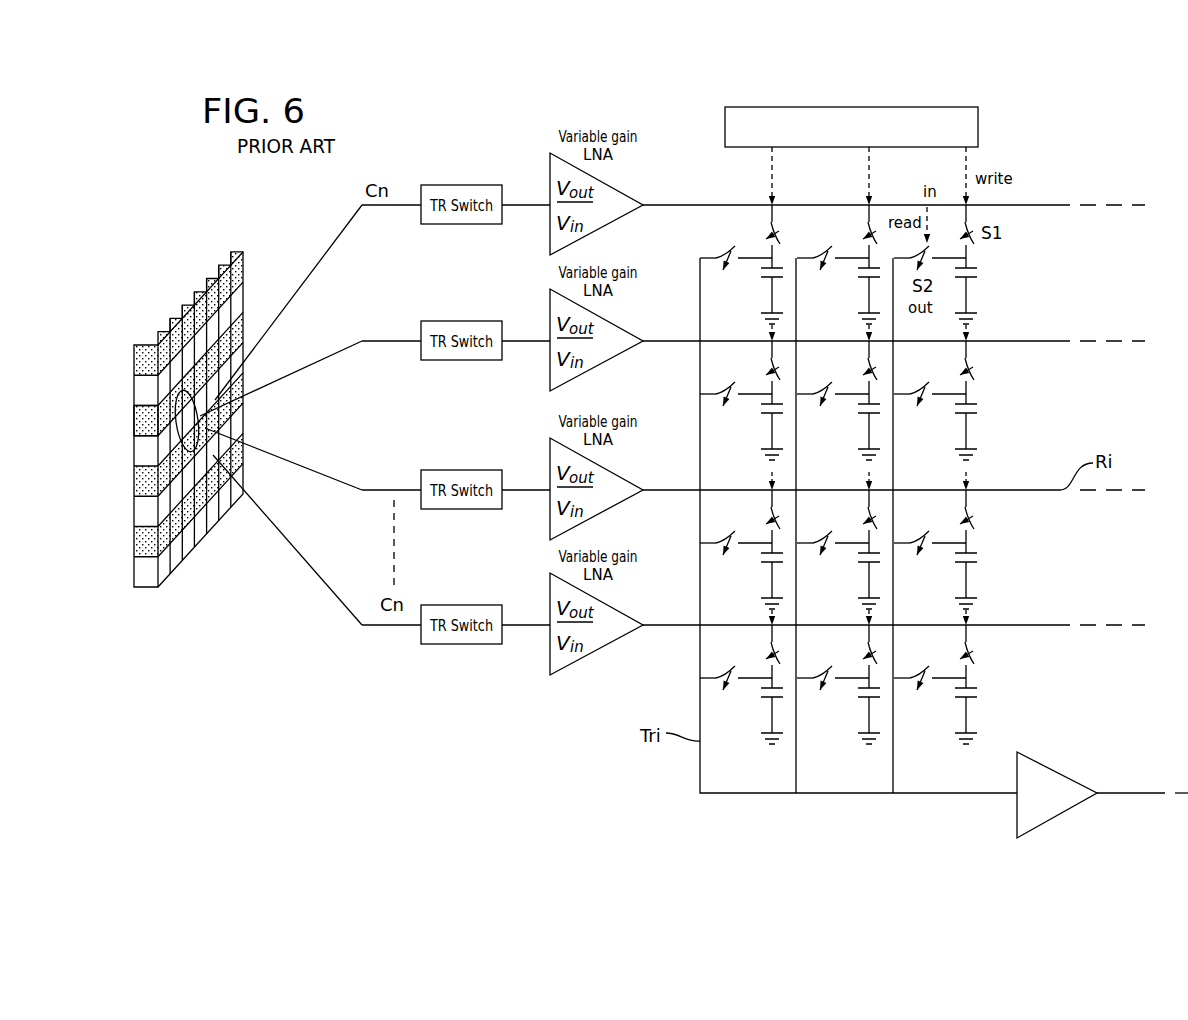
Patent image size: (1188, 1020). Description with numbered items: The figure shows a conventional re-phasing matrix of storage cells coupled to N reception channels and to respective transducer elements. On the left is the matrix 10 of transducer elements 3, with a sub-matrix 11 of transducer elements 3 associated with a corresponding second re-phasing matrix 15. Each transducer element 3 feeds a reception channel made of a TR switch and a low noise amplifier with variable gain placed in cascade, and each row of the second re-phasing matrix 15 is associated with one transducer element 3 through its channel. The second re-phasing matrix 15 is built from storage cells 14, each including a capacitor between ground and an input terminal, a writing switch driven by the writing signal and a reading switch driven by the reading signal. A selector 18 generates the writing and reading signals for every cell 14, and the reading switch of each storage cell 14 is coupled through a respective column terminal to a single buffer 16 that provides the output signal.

The transducer element 3 is at (140, 406).
The matrix of transducer elements 10 is at (179, 300).
The sub-matrix of transducer elements 11 is at (175, 445).
The storage cell 14 is at (995, 265).
The second re-phasing matrix 15 is at (1050, 300).
The buffer 16 is at (1068, 808).
The selector 18 is at (978, 124).